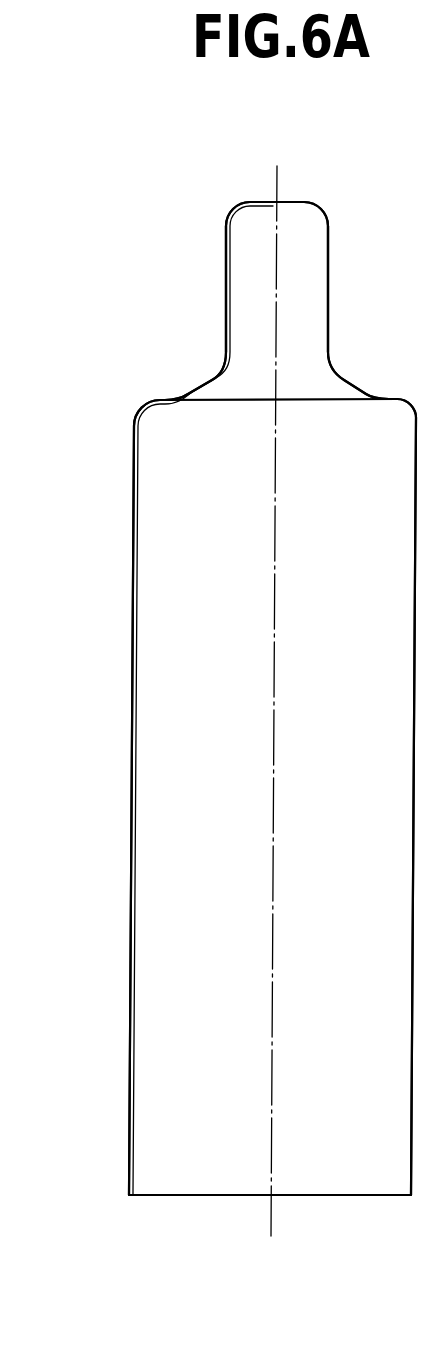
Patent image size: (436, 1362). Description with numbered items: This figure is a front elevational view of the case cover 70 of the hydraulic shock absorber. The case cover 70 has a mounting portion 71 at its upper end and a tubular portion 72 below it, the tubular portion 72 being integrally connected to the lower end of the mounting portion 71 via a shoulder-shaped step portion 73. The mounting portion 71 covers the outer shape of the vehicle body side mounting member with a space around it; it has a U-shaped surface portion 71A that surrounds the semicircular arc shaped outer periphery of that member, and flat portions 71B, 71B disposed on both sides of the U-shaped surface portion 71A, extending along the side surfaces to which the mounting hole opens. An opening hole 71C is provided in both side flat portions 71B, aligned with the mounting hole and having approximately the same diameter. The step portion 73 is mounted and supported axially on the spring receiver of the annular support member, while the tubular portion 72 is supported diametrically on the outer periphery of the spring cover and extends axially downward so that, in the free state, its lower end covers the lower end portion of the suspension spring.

The case cover 70 is at (226, 667).
The mounting portion 71 is at (273, 667).
The U-shaped surface portion 71A is at (297, 205).
The flat portion 71B is at (227, 247).
The opening hole 71C is at (228, 268).
The tubular portion 72 is at (131, 787).
The step portion 73 is at (170, 397).